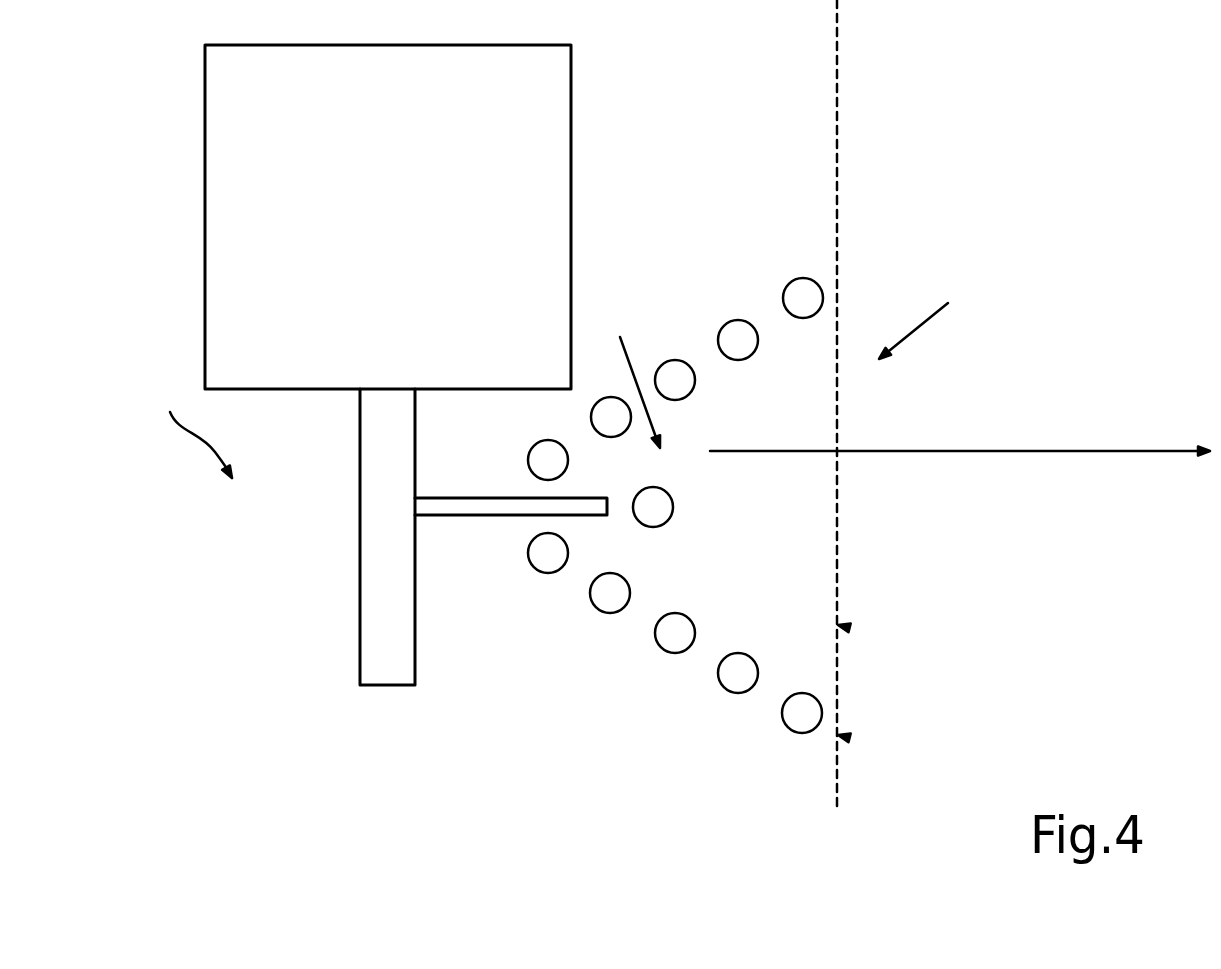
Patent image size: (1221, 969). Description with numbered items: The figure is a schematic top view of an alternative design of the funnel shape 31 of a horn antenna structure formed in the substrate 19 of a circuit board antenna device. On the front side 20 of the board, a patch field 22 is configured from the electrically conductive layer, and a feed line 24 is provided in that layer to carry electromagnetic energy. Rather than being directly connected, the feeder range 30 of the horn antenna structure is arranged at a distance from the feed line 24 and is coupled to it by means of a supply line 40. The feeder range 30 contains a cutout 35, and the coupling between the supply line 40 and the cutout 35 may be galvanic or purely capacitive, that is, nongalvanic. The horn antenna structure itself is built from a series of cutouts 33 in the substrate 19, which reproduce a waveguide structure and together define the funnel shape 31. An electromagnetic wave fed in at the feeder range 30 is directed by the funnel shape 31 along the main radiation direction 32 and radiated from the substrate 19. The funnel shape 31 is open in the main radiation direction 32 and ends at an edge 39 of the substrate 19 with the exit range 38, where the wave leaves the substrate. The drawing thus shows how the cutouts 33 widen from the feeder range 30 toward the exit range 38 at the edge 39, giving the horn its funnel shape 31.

The substrate 19 is at (835, 139).
The front side 20 is at (192, 428).
The patch field 22 is at (204, 175).
The feed line 24 is at (360, 510).
The feeder range 30 is at (611, 460).
The funnel shape 31 is at (924, 316).
The main radiation direction 32 is at (1091, 450).
The cutouts 33 is at (797, 310).
The cutout 35 is at (660, 503).
The exit range 38 is at (838, 625).
The edge 39 is at (838, 735).
The supply line 40 is at (468, 498).